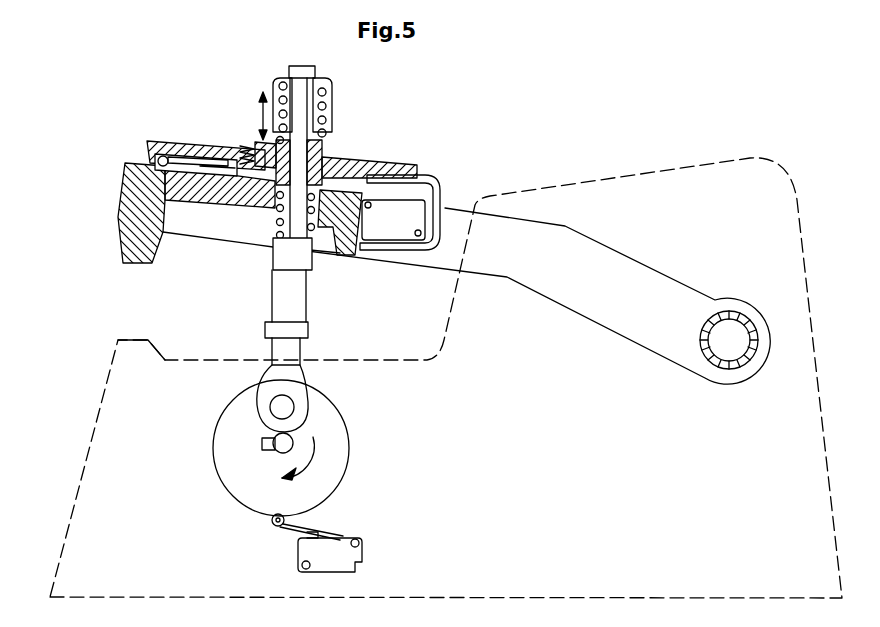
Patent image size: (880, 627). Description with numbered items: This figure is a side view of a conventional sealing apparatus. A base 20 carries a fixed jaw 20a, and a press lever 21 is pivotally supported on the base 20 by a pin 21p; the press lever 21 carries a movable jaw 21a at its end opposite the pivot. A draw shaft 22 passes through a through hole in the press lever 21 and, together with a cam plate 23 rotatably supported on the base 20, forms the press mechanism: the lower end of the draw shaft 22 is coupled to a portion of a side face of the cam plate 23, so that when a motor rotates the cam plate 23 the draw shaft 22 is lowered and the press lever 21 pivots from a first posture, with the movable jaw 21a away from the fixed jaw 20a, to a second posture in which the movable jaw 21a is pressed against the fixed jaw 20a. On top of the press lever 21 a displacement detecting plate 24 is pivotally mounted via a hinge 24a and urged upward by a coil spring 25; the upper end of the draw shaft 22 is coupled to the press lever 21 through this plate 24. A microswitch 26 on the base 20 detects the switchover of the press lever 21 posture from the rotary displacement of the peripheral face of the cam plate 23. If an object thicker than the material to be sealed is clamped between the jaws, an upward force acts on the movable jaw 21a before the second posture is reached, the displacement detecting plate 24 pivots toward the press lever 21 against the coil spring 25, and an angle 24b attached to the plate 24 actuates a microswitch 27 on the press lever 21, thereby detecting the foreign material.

The base 20 is at (87, 447).
The fixed jaw 20a is at (150, 340).
The press lever 21 is at (610, 257).
The movable jaw 21a is at (128, 245).
The pin 21p is at (728, 340).
The draw shaft 22 is at (295, 235).
The cam plate 23 is at (218, 453).
The displacement detecting plate 24 is at (198, 140).
The hinge 24a is at (160, 157).
The angle 24b is at (450, 175).
The coil spring 25 is at (247, 153).
The microswitch 26 is at (362, 553).
The microswitch 27 is at (393, 230).